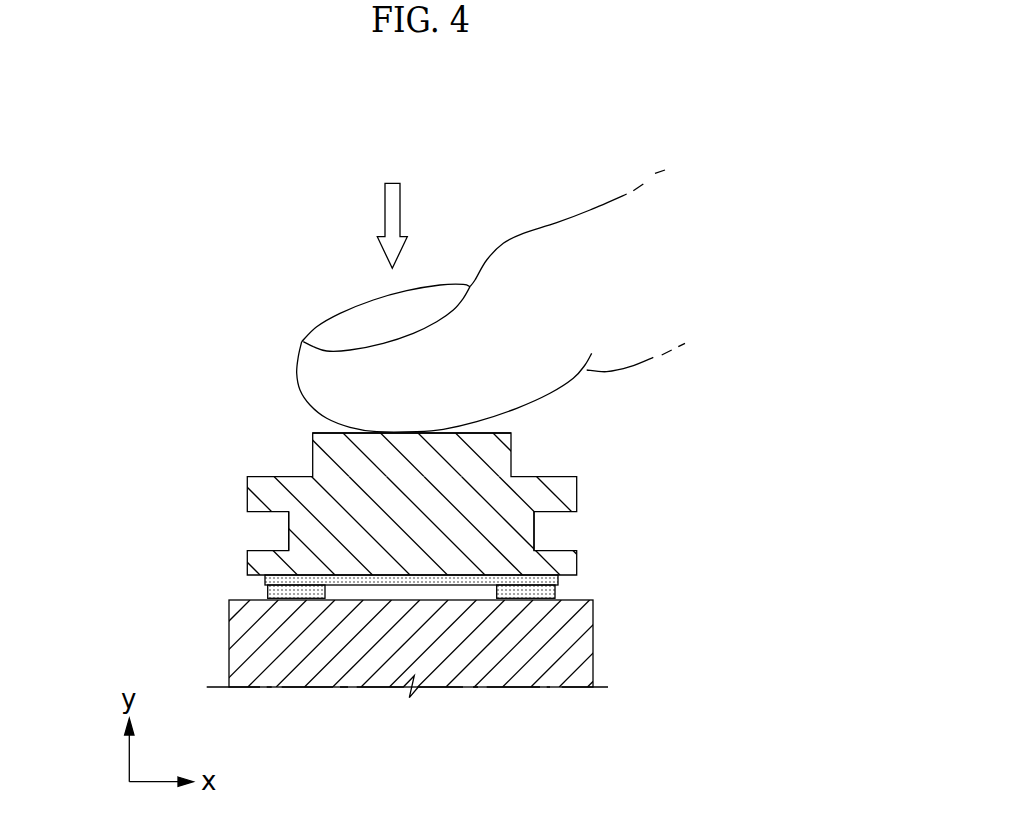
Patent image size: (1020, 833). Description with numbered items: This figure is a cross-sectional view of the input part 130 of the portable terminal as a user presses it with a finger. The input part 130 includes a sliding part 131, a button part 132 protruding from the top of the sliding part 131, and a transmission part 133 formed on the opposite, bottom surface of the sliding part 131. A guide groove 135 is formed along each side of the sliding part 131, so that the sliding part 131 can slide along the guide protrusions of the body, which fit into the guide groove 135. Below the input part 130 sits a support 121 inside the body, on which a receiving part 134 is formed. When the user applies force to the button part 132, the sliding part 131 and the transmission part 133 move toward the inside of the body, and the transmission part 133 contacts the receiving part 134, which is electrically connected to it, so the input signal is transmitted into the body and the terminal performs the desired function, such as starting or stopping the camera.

The support 121 is at (238, 632).
The input part 130 is at (449, 521).
The sliding part 131 is at (477, 510).
The button part 132 is at (495, 458).
The transmission part 133 is at (555, 582).
The receiving part 134 is at (470, 588).
The guide groove 135 is at (260, 529).